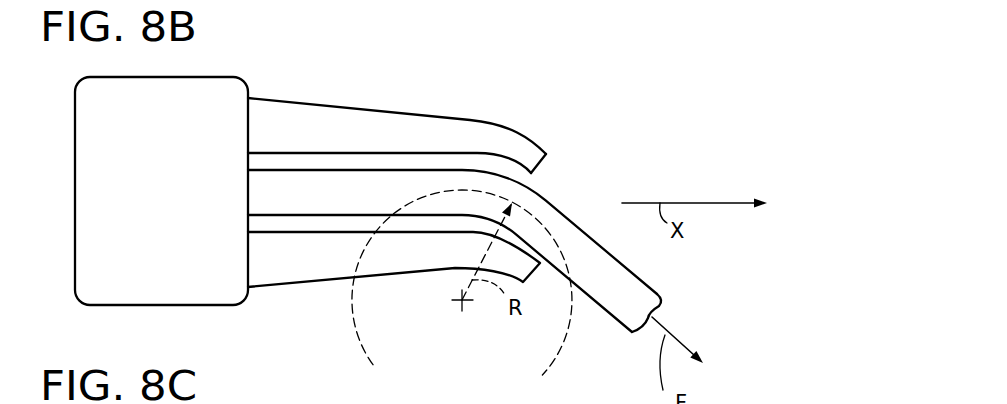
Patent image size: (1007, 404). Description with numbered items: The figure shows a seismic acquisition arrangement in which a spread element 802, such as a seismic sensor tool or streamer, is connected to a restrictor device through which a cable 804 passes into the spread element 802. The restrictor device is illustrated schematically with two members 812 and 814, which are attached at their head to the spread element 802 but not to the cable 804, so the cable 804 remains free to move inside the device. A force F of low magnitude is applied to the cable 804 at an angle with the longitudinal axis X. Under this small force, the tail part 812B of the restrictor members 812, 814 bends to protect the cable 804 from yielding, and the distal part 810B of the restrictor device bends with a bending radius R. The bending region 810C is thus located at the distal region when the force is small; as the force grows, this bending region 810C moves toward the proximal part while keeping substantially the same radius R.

The spread element 802 is at (200, 77).
The restrictor member 812 is at (387, 113).
The tail part 812B is at (543, 147).
The distal part 810B is at (541, 108).
The bending region 810C is at (573, 110).
The cable 804 is at (648, 278).
The restrictor member 814 is at (313, 279).